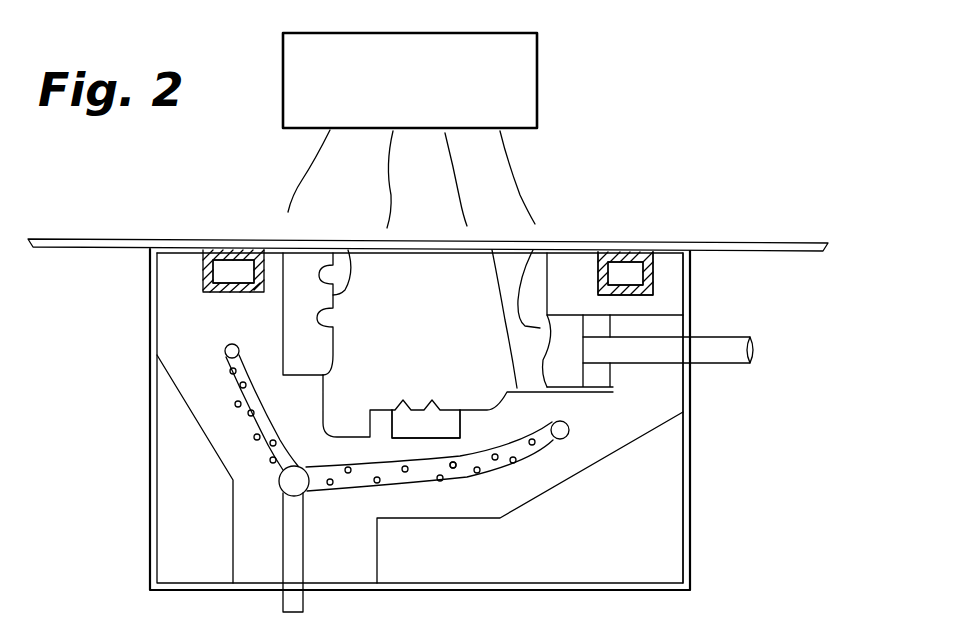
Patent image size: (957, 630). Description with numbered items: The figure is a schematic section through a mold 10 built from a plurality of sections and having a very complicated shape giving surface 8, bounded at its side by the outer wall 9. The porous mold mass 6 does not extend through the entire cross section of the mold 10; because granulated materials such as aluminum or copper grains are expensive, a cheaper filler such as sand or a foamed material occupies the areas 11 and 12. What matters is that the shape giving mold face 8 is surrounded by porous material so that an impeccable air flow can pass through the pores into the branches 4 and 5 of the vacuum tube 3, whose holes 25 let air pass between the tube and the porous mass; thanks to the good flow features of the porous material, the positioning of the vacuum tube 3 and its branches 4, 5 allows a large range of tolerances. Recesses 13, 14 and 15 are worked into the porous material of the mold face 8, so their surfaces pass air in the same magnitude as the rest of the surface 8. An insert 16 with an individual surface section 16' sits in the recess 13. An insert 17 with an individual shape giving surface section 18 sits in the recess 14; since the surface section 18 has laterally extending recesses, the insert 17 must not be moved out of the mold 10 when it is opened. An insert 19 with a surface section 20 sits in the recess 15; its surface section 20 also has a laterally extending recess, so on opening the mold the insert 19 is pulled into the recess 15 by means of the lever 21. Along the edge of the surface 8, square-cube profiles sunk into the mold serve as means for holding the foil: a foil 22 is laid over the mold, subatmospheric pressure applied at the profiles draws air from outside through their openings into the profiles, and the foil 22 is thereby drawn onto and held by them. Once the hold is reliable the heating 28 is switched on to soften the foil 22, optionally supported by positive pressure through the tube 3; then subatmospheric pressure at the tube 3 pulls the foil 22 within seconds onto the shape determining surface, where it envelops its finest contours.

The vacuum tube 3 is at (283, 598).
The branch of the vacuum tube 4 is at (245, 408).
The branch of the vacuum tube 5 is at (487, 464).
The porous mold mass 6 is at (345, 543).
The shape giving surface 8 is at (492, 248).
The housing wall 9 is at (692, 468).
The mold 10 is at (128, 383).
The filler area 11 is at (647, 546).
The filler area 12 is at (190, 493).
The recess 13 is at (455, 460).
The recess 14 is at (280, 316).
The recess 15 is at (597, 328).
The insert 16 is at (422, 517).
The individual surface section 16' is at (426, 387).
The insert 17 is at (292, 257).
The shape giving mold face surface section 18 is at (348, 249).
The insert 19 is at (563, 375).
The surface section 20 is at (533, 243).
The lever 21 is at (730, 351).
The foil 22 is at (778, 242).
The holes 25 is at (233, 482).
The heating 28 is at (418, 81).